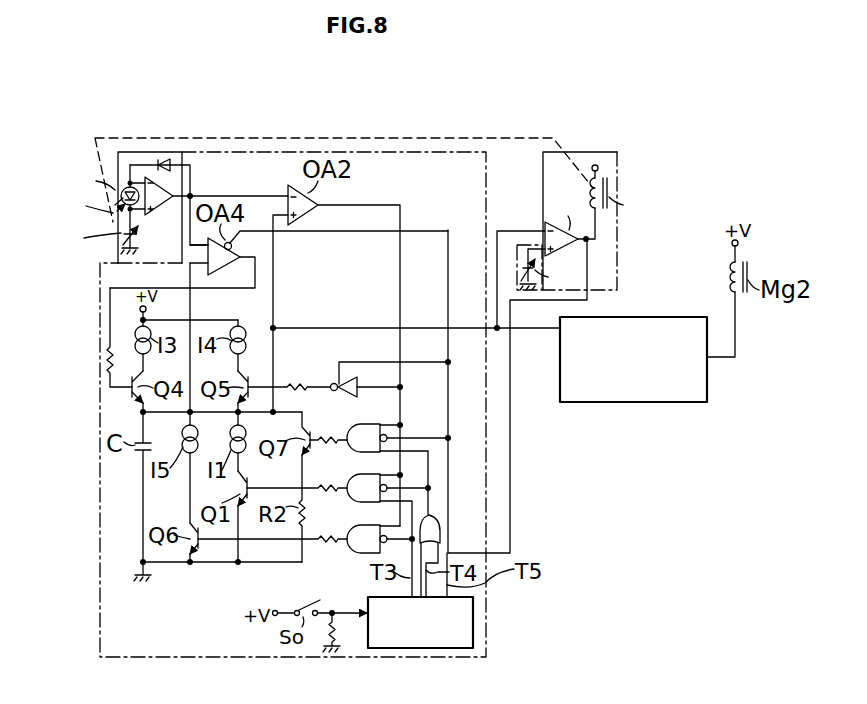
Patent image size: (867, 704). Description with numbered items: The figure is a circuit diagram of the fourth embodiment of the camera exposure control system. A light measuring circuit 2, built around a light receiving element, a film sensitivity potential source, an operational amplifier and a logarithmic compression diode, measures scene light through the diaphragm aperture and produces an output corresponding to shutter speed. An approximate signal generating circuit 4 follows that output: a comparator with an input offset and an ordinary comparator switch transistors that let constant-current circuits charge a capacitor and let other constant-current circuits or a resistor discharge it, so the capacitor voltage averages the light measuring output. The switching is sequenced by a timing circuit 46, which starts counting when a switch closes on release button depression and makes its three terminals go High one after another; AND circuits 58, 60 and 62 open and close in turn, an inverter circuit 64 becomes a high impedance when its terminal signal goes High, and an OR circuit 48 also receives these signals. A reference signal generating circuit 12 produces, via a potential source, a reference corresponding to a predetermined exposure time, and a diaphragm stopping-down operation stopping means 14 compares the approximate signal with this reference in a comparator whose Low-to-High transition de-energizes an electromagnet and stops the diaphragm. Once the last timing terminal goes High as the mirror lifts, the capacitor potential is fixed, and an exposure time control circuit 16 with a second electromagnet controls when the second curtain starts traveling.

The light measuring circuit 2 is at (139, 150).
The approximate signal generating circuit 4 is at (393, 661).
The reference signal generating circuit 12 is at (523, 240).
The diaphragm stopping-down operation stopping means 14 is at (587, 150).
The exposure time control circuit 16 is at (618, 403).
The timing circuit 46 is at (368, 596).
The OR circuit 48 is at (440, 523).
The AND circuit 58 is at (358, 525).
The AND circuit 60 is at (366, 474).
The AND circuit 62 is at (360, 424).
The inverter circuit 64 is at (343, 380).